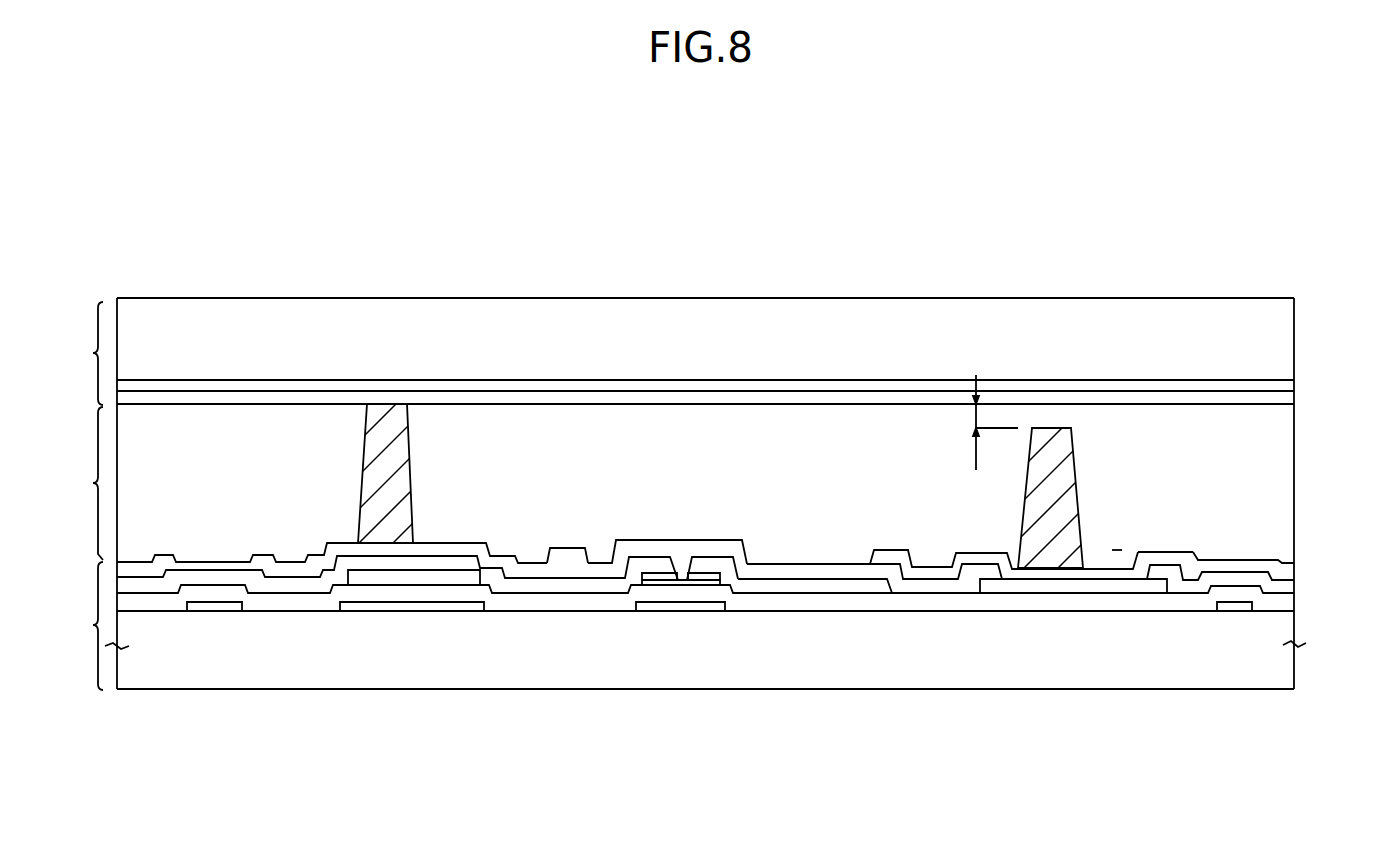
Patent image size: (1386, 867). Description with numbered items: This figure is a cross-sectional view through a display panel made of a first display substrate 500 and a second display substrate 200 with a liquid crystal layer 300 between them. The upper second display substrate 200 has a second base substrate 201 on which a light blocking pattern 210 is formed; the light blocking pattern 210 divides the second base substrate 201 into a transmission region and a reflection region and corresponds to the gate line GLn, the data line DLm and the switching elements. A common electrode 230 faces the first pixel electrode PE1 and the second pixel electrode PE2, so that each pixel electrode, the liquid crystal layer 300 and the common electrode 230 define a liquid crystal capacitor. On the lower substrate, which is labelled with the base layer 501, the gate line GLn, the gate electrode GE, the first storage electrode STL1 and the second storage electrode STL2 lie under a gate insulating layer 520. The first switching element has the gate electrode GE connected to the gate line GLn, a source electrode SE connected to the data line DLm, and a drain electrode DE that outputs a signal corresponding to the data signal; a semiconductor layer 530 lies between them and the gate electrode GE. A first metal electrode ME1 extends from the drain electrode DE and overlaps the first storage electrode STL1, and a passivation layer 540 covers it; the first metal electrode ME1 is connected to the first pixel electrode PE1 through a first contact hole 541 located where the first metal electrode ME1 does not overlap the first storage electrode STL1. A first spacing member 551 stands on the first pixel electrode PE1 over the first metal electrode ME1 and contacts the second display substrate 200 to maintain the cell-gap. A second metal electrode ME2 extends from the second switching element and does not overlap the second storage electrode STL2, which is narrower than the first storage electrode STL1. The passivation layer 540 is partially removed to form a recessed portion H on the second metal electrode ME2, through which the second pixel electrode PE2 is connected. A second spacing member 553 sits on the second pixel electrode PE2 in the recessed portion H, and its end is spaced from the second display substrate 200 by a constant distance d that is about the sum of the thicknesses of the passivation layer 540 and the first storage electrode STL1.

The second display substrate 200 is at (79, 353).
The liquid crystal layer 300 is at (79, 483).
The first display substrate 500 is at (79, 626).
The second base substrate 201 is at (1285, 342).
The light blocking pattern 210 is at (1283, 388).
The common electrode 230 is at (1283, 398).
The lower base substrate 501 is at (1297, 643).
The gate insulating layer 520 is at (1283, 606).
The semiconductor layer 530 is at (708, 586).
The passivation layer 540 is at (1283, 585).
The first contact hole 541 is at (534, 562).
The first spacing member 551 is at (397, 443).
The second spacing member 553 is at (1067, 447).
The distance d is at (989, 422).
The n-th gate line GLn is at (216, 607).
The first storage electrode STL1 is at (393, 606).
The first metal electrode ME1 is at (462, 582).
The drain electrode DE is at (523, 586).
The source electrode SE is at (590, 588).
The gate electrode GE is at (652, 606).
The m-th data line DLm is at (838, 588).
The second metal electrode ME2 is at (998, 583).
The second storage electrode STL2 is at (1237, 607).
The first pixel electrode PE1 is at (579, 552).
The second pixel electrode PE2 is at (1174, 552).
The recessed portion H is at (1117, 549).